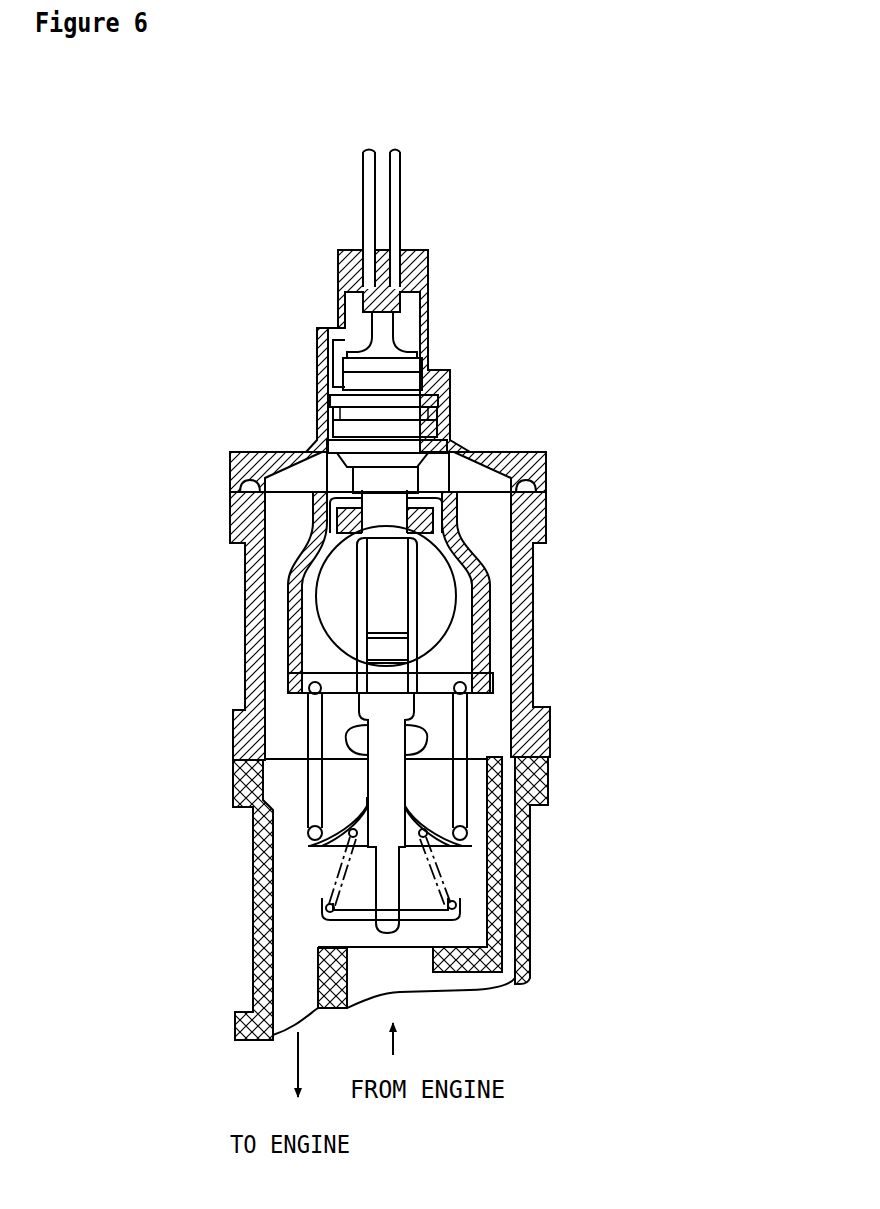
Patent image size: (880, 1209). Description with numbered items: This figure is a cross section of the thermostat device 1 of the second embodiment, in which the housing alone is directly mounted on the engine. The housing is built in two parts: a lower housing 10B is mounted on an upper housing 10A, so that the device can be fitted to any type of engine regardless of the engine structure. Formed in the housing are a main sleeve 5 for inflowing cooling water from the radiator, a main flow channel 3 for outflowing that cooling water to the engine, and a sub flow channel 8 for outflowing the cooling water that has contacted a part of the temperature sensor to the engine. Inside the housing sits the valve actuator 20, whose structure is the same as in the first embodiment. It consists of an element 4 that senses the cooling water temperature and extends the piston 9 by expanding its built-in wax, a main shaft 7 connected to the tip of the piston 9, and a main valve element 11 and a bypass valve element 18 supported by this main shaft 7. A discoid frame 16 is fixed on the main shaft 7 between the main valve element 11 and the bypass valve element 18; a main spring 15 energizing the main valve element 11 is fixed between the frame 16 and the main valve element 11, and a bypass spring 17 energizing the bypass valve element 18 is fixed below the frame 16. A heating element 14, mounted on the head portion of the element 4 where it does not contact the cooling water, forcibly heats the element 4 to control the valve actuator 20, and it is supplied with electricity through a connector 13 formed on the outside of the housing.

The thermostat device 1 is at (616, 305).
The main flow channel 3 is at (465, 653).
The element 4 is at (303, 448).
The main sleeve 5 is at (323, 587).
The main shaft 7 is at (397, 773).
The sub flow channel 8 is at (273, 517).
The piston 9 is at (398, 583).
The upper housing 10A is at (533, 577).
The lower housing 10B is at (530, 867).
The main valve element 11 is at (325, 673).
The connector 13 is at (412, 247).
The heating element 14 is at (400, 352).
The main spring 15 is at (310, 712).
The discoid frame 16 is at (452, 840).
The bypass spring 17 is at (343, 867).
The bypass valve element 18 is at (453, 912).
The valve actuator 20 is at (288, 803).